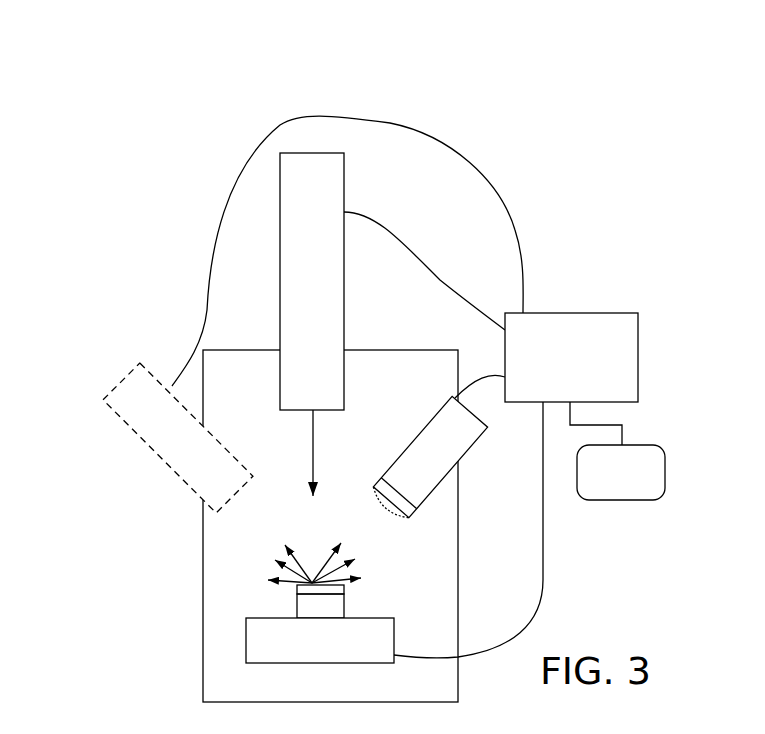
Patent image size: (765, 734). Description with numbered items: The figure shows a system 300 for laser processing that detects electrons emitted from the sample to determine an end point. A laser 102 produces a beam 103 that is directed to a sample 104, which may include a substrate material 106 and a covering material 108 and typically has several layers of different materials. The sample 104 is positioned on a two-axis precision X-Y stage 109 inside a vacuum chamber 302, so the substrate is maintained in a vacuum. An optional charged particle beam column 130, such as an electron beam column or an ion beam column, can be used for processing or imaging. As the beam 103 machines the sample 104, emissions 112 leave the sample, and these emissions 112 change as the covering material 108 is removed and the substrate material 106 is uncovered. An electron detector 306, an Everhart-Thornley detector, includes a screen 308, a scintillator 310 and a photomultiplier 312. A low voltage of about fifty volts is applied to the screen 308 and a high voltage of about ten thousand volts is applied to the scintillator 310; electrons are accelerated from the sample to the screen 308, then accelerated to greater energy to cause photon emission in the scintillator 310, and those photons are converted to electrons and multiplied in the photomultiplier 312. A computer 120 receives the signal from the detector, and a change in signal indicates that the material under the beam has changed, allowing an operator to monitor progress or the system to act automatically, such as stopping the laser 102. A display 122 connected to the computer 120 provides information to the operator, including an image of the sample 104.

The system 300 is at (197, 280).
The vacuum chamber 302 is at (203, 533).
The charged particle beam column 130 is at (165, 460).
The laser 102 is at (345, 316).
The beam 103 is at (313, 432).
The electron detector 306 is at (417, 416).
The photomultiplier 312 is at (466, 452).
The scintillator 310 is at (412, 518).
The screen 308 is at (396, 520).
The emissions 112 is at (284, 554).
The sample 104 is at (320, 587).
The covering material 108 is at (345, 590).
The substrate material 106 is at (345, 608).
The X-Y stage 109 is at (394, 632).
The computer 120 is at (587, 313).
The display 122 is at (623, 445).